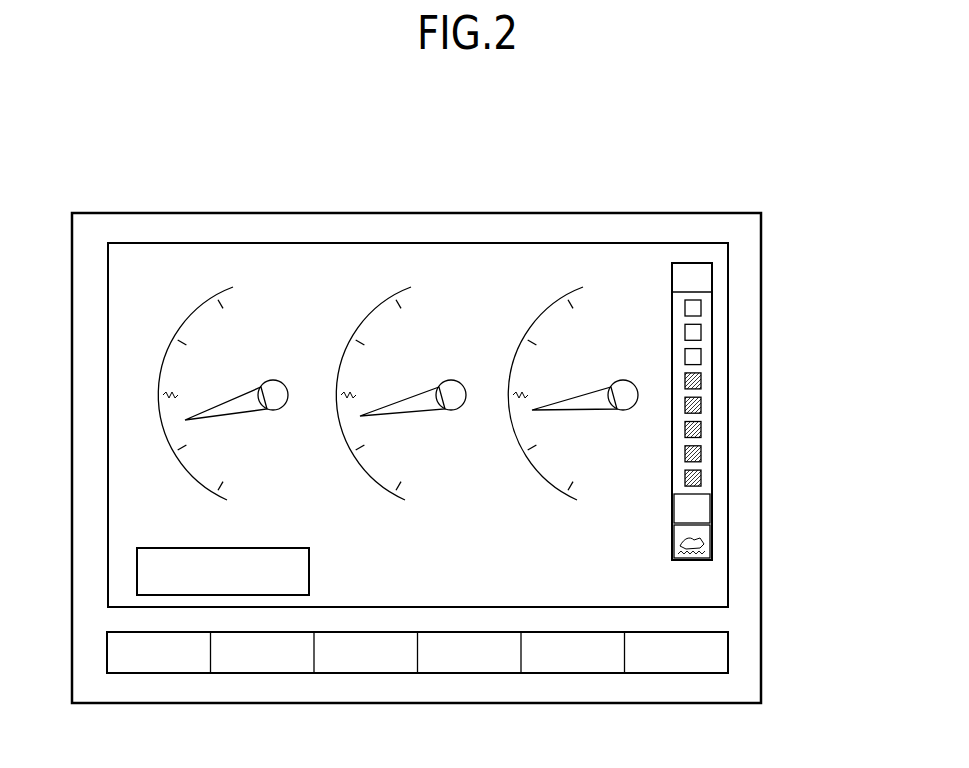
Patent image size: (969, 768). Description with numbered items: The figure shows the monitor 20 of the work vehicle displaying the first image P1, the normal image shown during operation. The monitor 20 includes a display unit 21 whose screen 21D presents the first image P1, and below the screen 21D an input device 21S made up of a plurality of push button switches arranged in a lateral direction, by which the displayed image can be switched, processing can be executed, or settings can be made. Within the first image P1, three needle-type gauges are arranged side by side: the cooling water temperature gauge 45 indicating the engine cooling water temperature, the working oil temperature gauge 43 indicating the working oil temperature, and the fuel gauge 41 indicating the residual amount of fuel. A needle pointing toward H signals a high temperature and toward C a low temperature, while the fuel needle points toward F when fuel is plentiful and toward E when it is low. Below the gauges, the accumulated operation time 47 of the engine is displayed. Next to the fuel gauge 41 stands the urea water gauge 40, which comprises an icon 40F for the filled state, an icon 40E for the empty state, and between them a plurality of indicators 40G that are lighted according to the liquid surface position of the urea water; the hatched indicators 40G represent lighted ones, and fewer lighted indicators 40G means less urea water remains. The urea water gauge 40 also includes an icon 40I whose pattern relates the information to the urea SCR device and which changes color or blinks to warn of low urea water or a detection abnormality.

The monitor 20 is at (730, 165).
The display unit 21 is at (97, 212).
The screen 21D is at (142, 242).
The input device 21S is at (745, 650).
The fuel gauge 41 is at (544, 282).
The working oil temperature gauge 43 is at (368, 282).
The cooling water temperature gauge 45 is at (193, 282).
The accumulated operation time 47 is at (326, 574).
The urea water gauge 40 is at (778, 411).
The icon 40F is at (712, 278).
The indicators 40G is at (701, 308).
The icon 40E is at (712, 508).
The icon 40I is at (750, 527).
The first image P1 is at (712, 583).